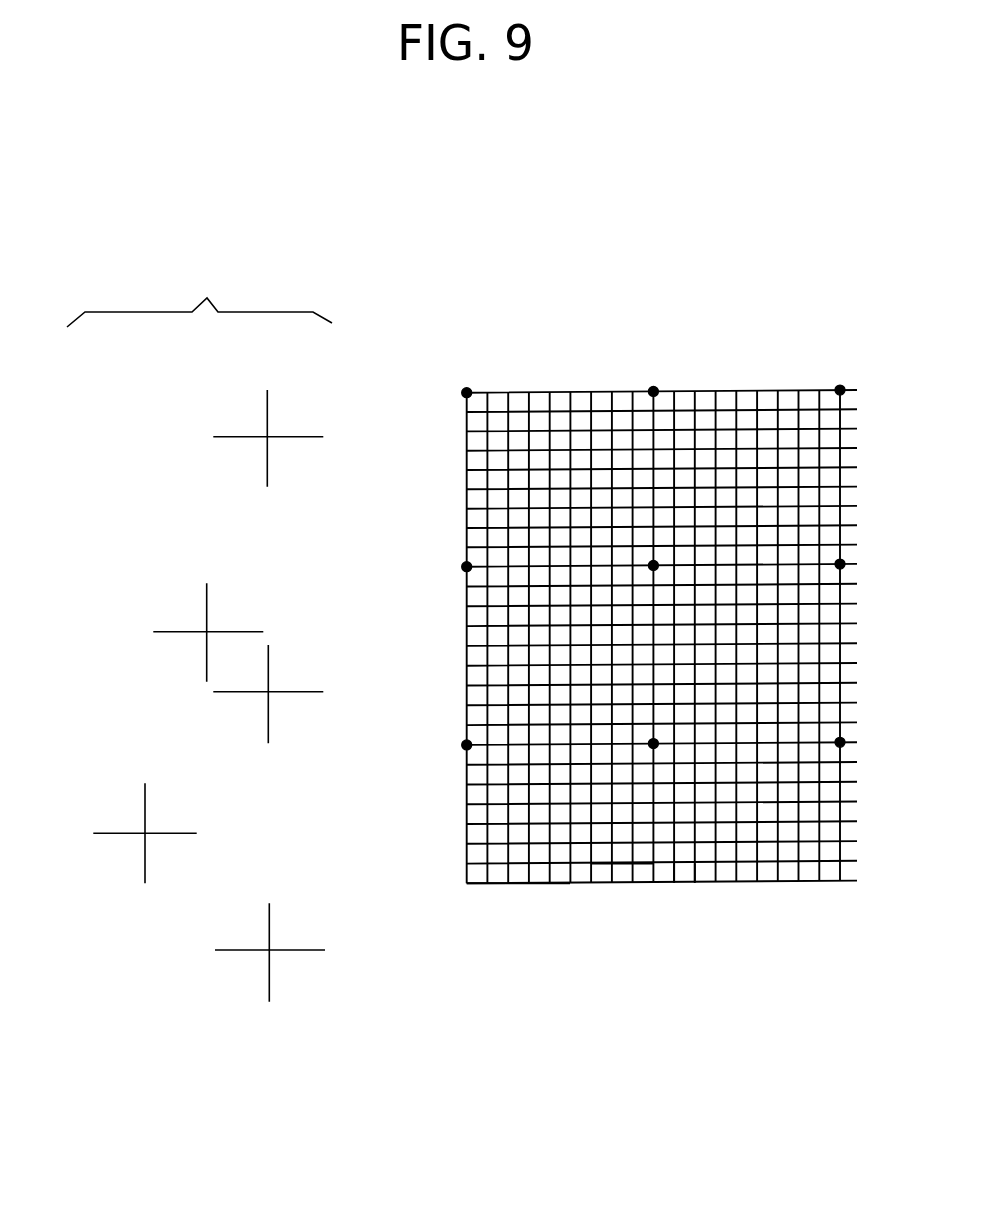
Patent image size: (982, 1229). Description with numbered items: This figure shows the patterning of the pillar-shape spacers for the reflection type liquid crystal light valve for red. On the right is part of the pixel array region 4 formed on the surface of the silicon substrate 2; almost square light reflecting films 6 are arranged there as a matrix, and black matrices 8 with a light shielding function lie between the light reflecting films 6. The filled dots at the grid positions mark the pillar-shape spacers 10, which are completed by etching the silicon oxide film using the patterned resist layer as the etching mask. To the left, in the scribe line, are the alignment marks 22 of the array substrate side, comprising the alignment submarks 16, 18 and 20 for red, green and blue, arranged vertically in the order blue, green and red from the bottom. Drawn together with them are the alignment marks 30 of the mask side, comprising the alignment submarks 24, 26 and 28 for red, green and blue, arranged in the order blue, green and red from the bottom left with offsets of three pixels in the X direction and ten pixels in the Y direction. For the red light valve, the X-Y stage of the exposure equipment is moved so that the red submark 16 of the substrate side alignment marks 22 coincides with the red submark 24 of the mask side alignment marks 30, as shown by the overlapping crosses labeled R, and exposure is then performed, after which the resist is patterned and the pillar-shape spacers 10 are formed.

The silicon substrate 2 is at (416, 838).
The pixel array region 4 is at (517, 908).
The light reflecting film 6 is at (690, 870).
The black matrix 8 is at (613, 872).
The pillar-shape spacer 10 is at (467, 746).
The alignment submark for red 16 is at (306, 463).
The alignment submark for green 18 is at (293, 710).
The alignment submark for blue 20 is at (292, 975).
The alignment marks in the array substrate side 22 is at (199, 295).
The alignment submark for red 24 is at (292, 462).
The alignment submark for green 26 is at (218, 620).
The alignment submark for blue 28 is at (153, 823).
The alignment marks of the mask side 30 is at (199, 295).